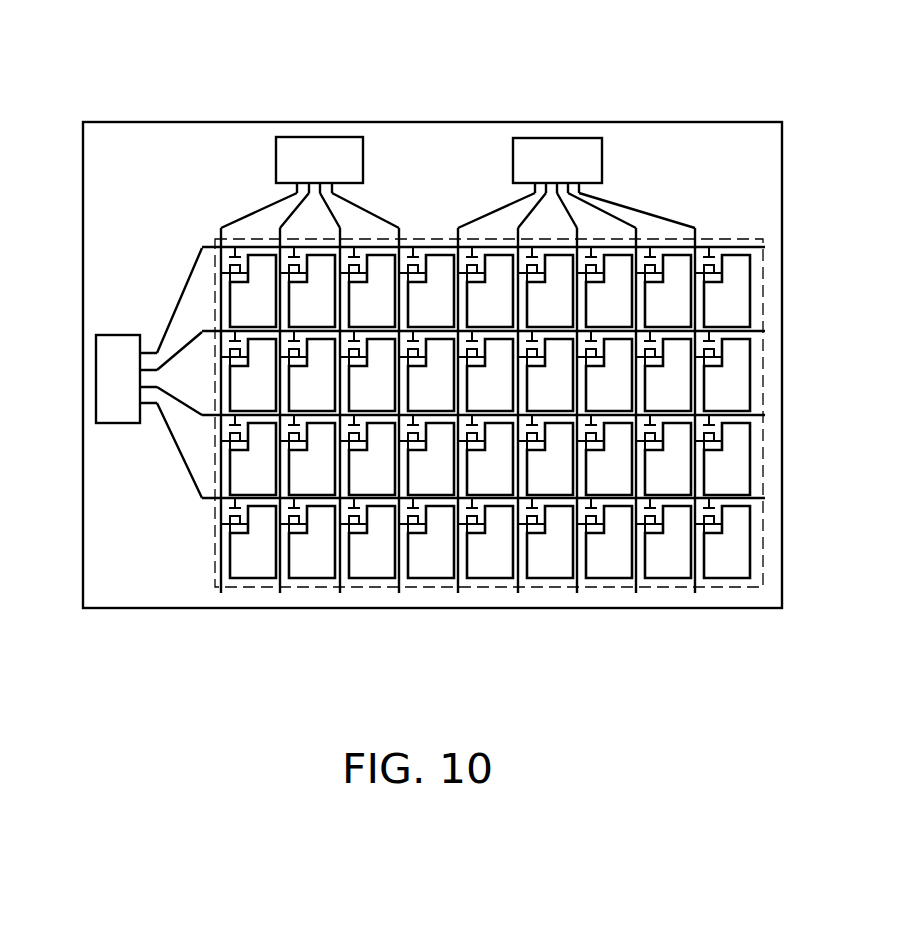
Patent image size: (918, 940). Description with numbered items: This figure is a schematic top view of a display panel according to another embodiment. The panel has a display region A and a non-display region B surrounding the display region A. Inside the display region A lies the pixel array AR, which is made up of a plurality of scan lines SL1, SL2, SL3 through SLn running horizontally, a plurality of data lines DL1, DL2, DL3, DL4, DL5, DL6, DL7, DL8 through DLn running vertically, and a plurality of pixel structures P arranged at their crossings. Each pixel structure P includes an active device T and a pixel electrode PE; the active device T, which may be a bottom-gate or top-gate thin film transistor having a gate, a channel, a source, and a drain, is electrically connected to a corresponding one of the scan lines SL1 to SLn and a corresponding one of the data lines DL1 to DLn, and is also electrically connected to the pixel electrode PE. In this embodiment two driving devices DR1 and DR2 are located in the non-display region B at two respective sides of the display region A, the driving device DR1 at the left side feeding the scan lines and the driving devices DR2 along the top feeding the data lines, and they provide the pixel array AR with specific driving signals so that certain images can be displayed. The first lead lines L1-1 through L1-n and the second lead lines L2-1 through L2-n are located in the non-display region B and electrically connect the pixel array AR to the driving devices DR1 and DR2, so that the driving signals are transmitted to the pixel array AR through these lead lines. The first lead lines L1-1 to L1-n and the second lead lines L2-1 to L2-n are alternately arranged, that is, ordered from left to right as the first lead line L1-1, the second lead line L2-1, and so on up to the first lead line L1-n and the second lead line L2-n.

The non-display region B is at (737, 166).
The display region A is at (764, 266).
The pixel array AR is at (503, 355).
The pixel structure P is at (221, 230).
The active device T is at (233, 256).
The pixel electrode PE is at (256, 255).
The scan line SL1 is at (202, 249).
The scan line SL2 is at (200, 334).
The scan line SL3 is at (210, 440).
The scan line SLn is at (214, 497).
The data line DL1 is at (221, 577).
The data line DL2 is at (280, 577).
The data line DL3 is at (340, 577).
The data line DL4 is at (399, 577).
The data line DL5 is at (458, 577).
The data line DL6 is at (518, 577).
The data line DL7 is at (577, 577).
The data line DL8 is at (636, 577).
The data line DLn is at (695, 577).
The driving device DR1 is at (103, 377).
The driving device DR2 is at (322, 137).
The first lead line L1-1 is at (178, 303).
The second lead line L2-1 is at (157, 353).
The first lead line L1-n is at (157, 403).
The second lead line L2-n is at (170, 432).